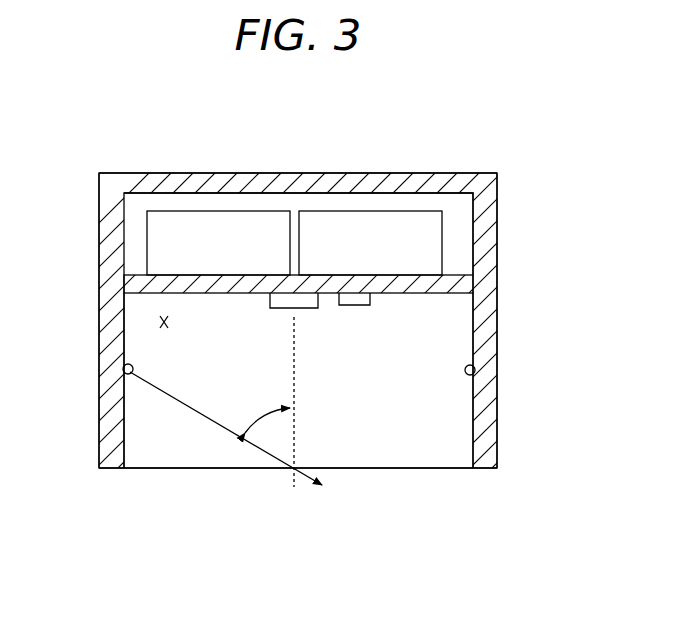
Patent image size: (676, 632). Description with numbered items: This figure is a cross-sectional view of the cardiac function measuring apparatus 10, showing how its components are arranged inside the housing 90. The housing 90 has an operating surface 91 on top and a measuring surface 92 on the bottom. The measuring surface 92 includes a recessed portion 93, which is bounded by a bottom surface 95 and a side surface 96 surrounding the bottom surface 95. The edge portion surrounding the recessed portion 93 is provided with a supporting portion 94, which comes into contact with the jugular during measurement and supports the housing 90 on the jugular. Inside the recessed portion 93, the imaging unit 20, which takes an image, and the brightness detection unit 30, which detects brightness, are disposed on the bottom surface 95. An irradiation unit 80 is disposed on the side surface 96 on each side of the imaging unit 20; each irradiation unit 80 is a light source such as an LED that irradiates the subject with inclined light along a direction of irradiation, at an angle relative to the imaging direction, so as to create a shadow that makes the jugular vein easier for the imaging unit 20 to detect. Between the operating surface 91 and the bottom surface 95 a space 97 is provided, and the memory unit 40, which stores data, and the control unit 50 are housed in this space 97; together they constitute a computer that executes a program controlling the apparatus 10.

The cardiac function measuring apparatus 10 is at (70, 112).
The imaging unit 20 is at (303, 308).
The brightness detection unit 30 is at (355, 306).
The memory unit 40 is at (220, 220).
The control unit 50 is at (350, 215).
The irradiation unit 80 is at (123, 369).
The housing 90 is at (500, 197).
The operating surface 91 is at (162, 172).
The measuring surface 92 is at (196, 470).
The recessed portion 93 is at (352, 450).
The supporting portion 94 is at (110, 470).
The bottom surface 95 is at (208, 294).
The side surface 96 is at (128, 434).
The space 97 is at (440, 205).